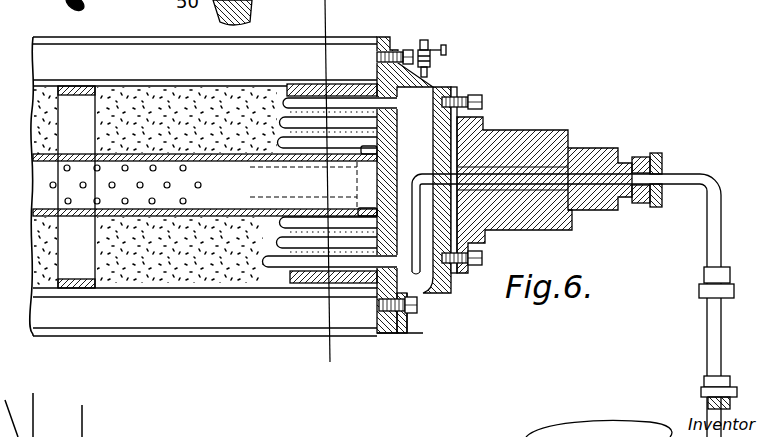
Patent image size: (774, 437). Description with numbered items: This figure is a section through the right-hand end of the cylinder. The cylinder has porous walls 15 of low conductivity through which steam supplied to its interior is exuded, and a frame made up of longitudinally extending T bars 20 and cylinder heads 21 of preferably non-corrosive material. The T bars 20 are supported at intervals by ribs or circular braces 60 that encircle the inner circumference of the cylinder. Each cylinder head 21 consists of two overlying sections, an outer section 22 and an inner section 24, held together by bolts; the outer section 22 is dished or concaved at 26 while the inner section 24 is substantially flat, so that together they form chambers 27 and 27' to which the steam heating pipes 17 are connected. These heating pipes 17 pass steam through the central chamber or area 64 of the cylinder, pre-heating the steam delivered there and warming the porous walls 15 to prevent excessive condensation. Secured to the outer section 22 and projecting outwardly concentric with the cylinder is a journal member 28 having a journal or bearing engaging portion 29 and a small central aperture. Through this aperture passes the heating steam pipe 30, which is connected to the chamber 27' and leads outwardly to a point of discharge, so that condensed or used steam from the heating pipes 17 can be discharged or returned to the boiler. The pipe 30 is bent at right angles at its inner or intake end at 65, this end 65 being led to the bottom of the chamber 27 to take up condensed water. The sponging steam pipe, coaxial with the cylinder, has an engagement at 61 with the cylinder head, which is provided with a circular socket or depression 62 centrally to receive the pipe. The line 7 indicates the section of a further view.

The section line 7 is at (332, 194).
The porous walls 15 is at (118, 108).
The steam heating pipes 17 is at (283, 100).
The T bars 20 is at (345, 50).
The cylinder heads 21 is at (388, 34).
The outer section 22 is at (411, 325).
The inner section 24 is at (386, 334).
The dished portion 26 is at (428, 118).
The chamber 27 is at (499, 190).
The chamber 27' is at (497, 173).
The journal member 28 is at (518, 130).
The journal or bearing engaging portion 29 is at (556, 130).
The heating steam pipe 30 is at (583, 180).
The ribs or circular braces 60 is at (92, 130).
The engagement 61 is at (373, 152).
The circular socket or depression 62 is at (368, 218).
The central chamber or area 64 is at (178, 108).
The bent end 65 is at (427, 190).